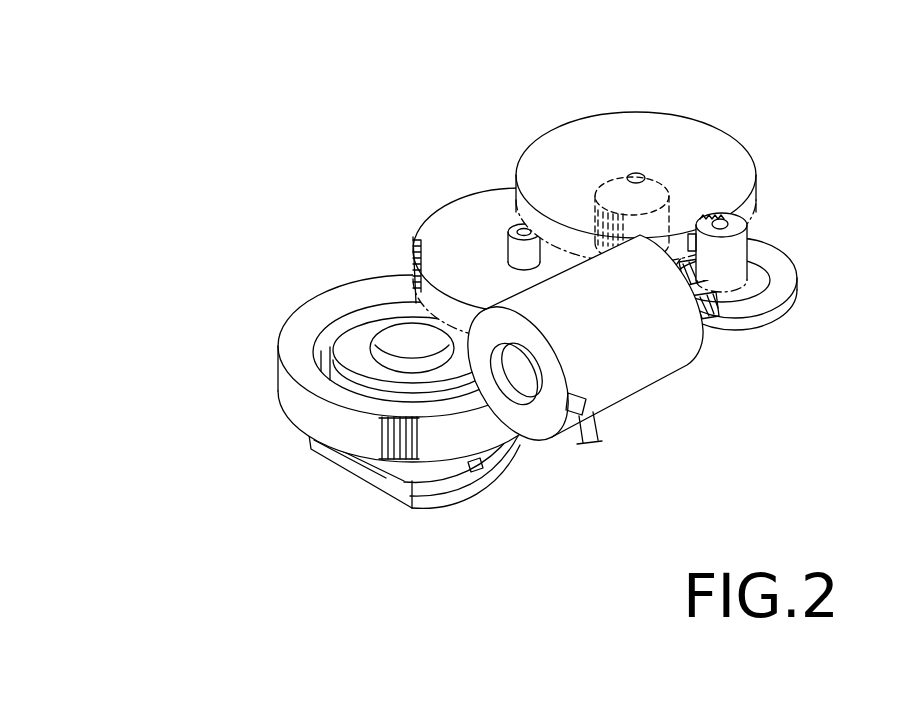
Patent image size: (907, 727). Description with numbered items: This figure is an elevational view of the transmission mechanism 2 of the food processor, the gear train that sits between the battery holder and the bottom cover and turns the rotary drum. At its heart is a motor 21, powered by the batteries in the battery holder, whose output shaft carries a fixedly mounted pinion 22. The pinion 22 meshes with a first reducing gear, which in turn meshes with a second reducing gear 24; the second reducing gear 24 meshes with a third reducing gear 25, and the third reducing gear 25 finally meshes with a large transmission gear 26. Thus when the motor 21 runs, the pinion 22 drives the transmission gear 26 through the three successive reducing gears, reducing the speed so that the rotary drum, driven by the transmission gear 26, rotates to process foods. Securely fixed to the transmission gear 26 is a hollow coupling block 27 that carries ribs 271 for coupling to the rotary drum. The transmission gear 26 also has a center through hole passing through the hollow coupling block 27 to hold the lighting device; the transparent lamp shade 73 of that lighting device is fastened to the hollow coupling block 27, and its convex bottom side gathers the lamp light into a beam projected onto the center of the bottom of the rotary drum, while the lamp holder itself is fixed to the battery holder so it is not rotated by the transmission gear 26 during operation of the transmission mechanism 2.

The transmission mechanism 2 is at (522, 306).
The motor 21 is at (648, 372).
The pinion 22 is at (700, 320).
The second reducing gear 24 is at (697, 139).
The third reducing gear 25 is at (447, 222).
The transmission gear 26 is at (280, 380).
The hollow coupling block 27 is at (447, 477).
The ribs 271 is at (481, 467).
The transparent lamp shade 73 is at (427, 503).